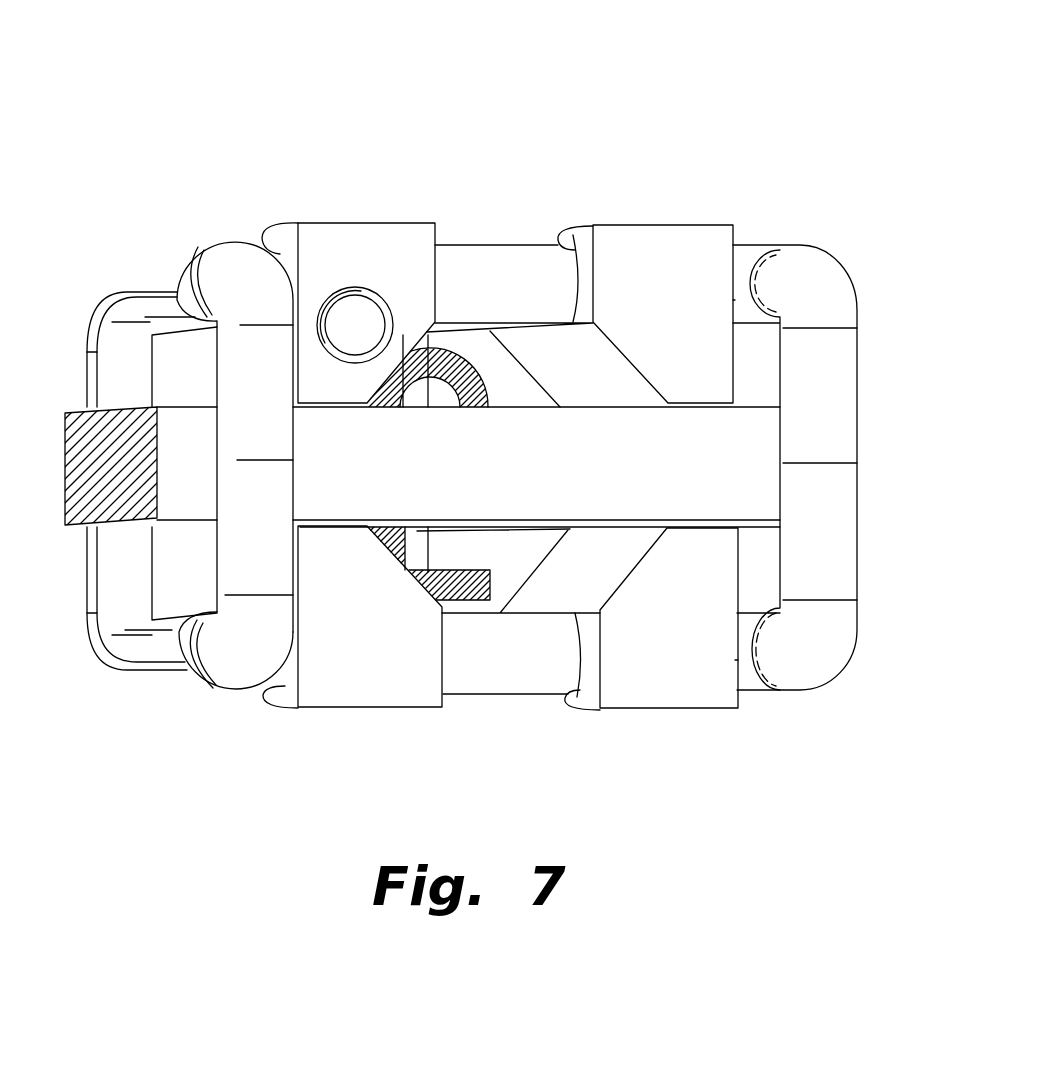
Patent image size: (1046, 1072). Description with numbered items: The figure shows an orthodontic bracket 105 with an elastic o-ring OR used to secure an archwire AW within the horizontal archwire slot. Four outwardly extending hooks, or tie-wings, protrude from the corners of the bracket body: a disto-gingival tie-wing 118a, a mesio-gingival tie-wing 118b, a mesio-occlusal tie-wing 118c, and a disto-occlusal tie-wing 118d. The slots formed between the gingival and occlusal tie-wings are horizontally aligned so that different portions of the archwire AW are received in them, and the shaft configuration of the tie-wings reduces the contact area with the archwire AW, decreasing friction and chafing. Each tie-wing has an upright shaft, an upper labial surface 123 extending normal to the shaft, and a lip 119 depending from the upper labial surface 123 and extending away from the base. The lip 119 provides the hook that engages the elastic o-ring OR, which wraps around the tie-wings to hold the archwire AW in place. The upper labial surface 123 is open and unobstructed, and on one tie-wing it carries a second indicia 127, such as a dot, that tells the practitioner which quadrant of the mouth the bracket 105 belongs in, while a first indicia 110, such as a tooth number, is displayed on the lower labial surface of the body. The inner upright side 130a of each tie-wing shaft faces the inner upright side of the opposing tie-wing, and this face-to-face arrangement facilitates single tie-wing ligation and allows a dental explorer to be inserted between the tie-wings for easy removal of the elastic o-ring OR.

The orthodontic bracket 105 is at (190, 75).
The elastic o-ring OR is at (185, 253).
The archwire AW is at (696, 486).
The disto-gingival tie-wing 118a is at (366, 195).
The mesio-gingival tie-wing 118b is at (673, 195).
The mesio-occlusal tie-wing 118c is at (684, 742).
The disto-occlusal tie-wing 118d is at (375, 742).
The lip 119 is at (285, 233).
The upper labial surface 123 is at (397, 271).
The second indicia 127 is at (353, 317).
The first indicia 110 is at (440, 372).
The inner upright side 130a is at (598, 372).